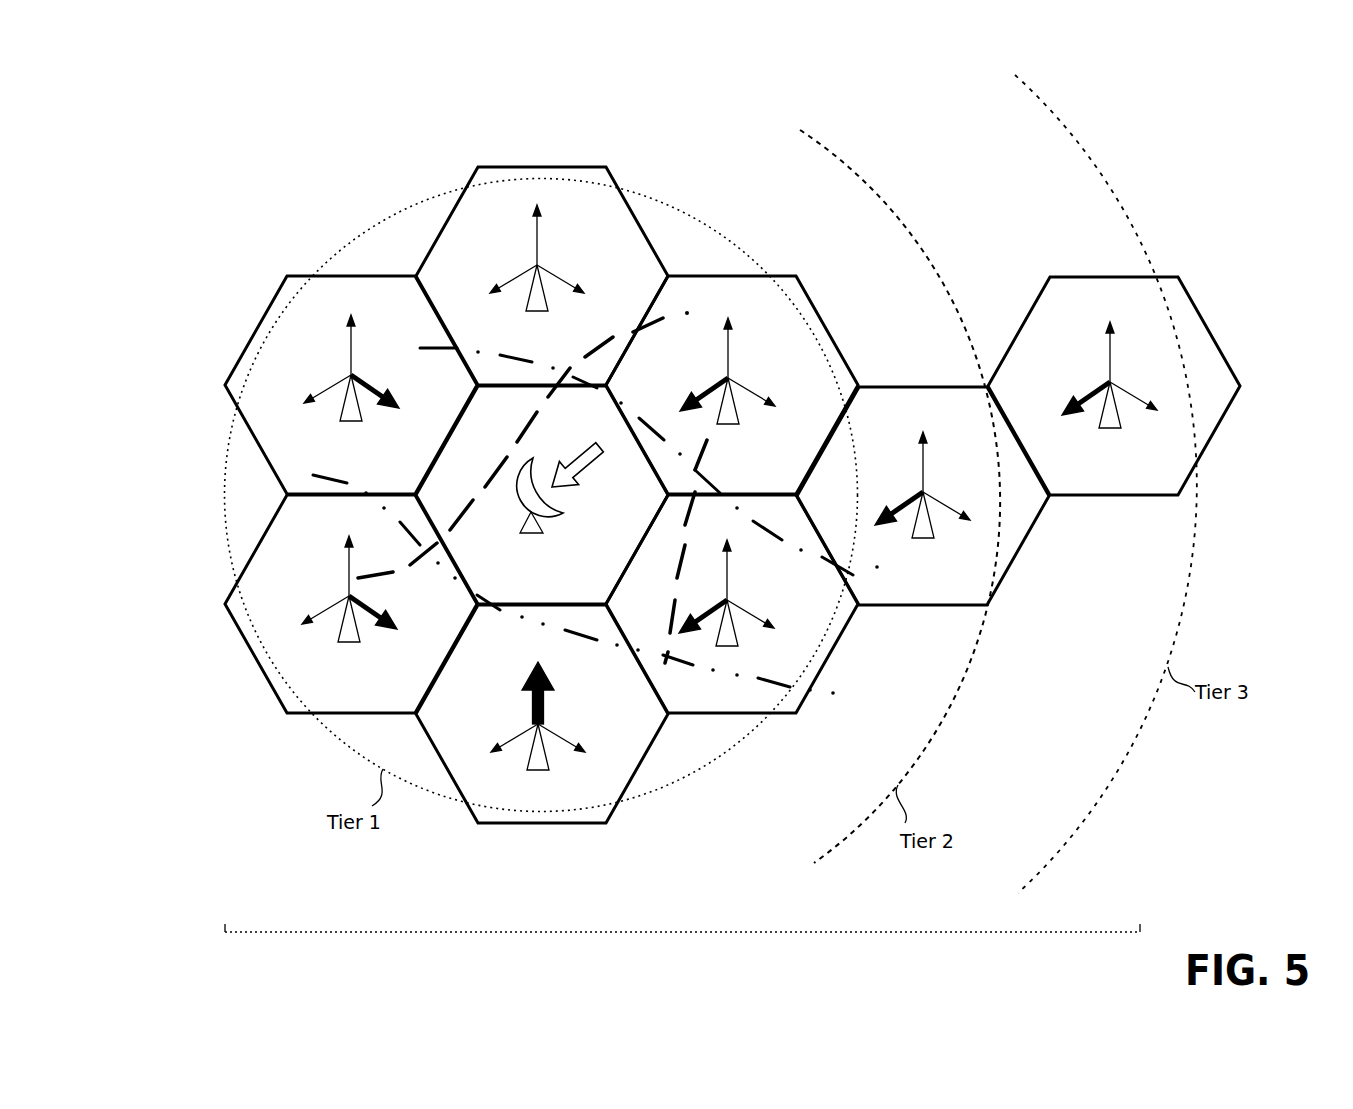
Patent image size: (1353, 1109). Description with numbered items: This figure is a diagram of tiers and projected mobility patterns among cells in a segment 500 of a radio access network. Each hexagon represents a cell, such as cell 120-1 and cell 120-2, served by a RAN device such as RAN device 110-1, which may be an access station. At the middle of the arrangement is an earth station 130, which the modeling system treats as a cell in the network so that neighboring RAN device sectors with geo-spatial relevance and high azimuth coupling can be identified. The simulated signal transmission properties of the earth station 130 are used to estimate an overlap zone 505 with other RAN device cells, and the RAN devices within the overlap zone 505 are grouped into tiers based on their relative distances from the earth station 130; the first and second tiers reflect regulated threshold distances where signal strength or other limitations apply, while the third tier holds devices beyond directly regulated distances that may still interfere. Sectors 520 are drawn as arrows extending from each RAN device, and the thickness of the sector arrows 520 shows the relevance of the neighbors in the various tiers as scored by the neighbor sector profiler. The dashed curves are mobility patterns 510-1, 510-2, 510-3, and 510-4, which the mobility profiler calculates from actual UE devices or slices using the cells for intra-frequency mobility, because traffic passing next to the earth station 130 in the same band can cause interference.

The segment 500 is at (196, 100).
The cell 120-1 is at (257, 329).
The cell 120-2 is at (532, 167).
The RAN device 110-1 is at (346, 432).
The earth station 130 is at (557, 515).
The overlap zone 505 is at (662, 931).
The mobility pattern 510-1 is at (775, 684).
The mobility pattern 510-2 is at (853, 575).
The mobility pattern 510-3 is at (670, 660).
The mobility pattern 510-4 is at (677, 313).
The sectors 520 is at (346, 343).